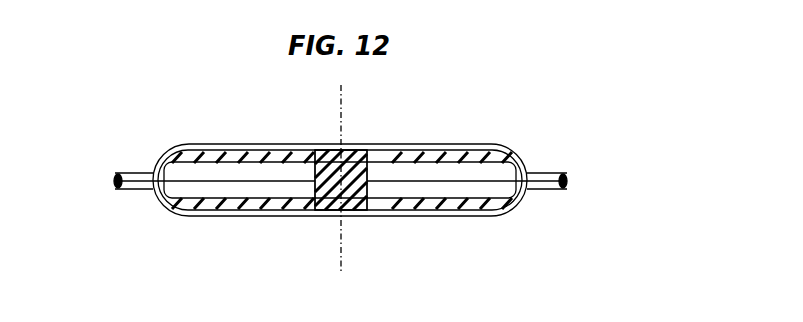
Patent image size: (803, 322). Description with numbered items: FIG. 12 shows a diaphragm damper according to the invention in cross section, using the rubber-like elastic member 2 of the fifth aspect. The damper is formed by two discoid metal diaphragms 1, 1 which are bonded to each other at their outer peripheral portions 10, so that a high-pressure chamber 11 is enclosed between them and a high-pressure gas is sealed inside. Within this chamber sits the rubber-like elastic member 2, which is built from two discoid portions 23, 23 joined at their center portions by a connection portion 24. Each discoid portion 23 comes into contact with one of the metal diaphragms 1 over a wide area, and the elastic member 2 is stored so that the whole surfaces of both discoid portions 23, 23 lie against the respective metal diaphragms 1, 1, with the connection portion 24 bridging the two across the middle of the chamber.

The outer peripheral portions 10 is at (545, 167).
The metal diaphragm 1 is at (264, 147).
The high-pressure chamber 11 is at (268, 190).
The rubber-like elastic member 2 is at (373, 206).
The discoid portions 23 is at (443, 146).
The connection portion 24 is at (370, 146).